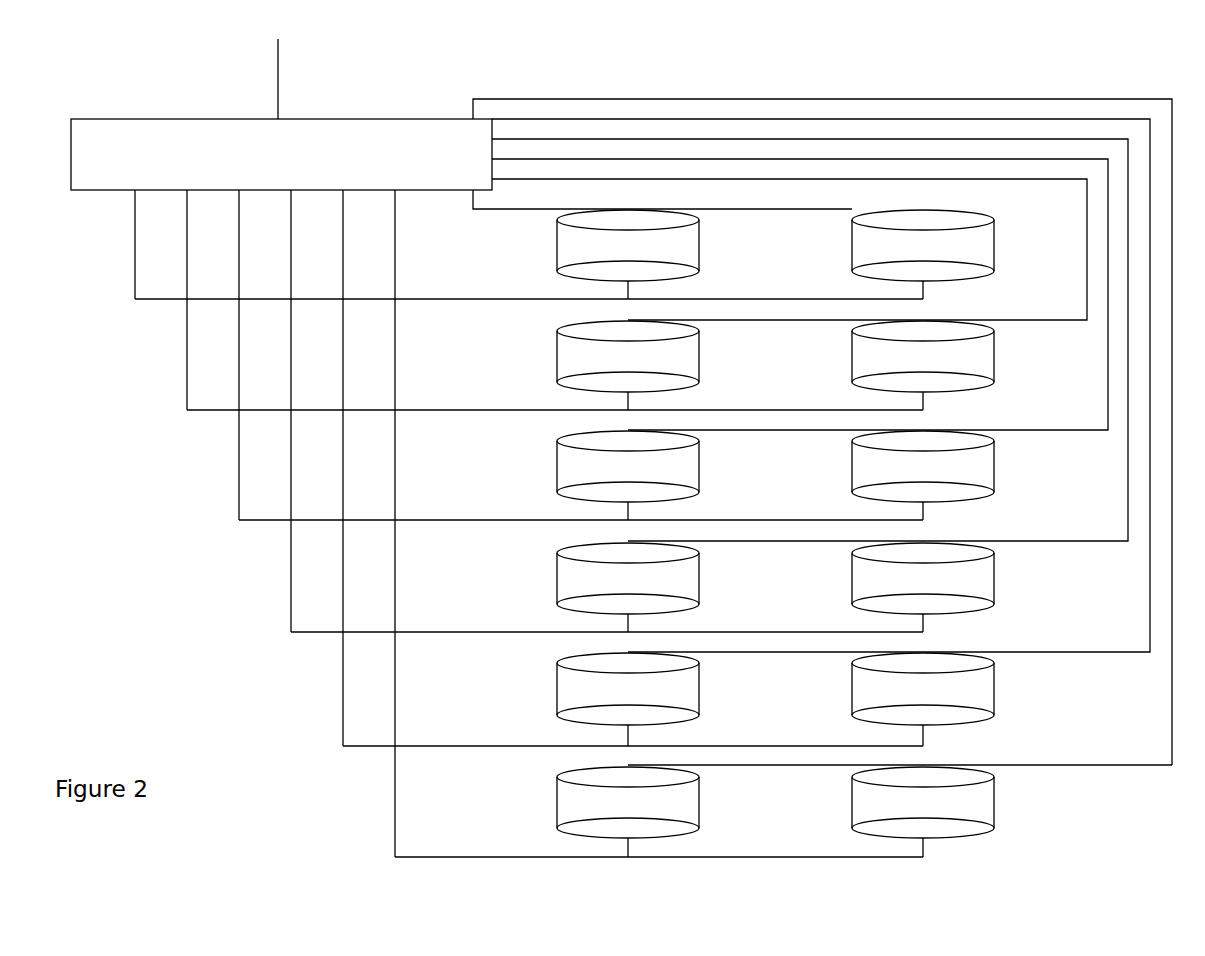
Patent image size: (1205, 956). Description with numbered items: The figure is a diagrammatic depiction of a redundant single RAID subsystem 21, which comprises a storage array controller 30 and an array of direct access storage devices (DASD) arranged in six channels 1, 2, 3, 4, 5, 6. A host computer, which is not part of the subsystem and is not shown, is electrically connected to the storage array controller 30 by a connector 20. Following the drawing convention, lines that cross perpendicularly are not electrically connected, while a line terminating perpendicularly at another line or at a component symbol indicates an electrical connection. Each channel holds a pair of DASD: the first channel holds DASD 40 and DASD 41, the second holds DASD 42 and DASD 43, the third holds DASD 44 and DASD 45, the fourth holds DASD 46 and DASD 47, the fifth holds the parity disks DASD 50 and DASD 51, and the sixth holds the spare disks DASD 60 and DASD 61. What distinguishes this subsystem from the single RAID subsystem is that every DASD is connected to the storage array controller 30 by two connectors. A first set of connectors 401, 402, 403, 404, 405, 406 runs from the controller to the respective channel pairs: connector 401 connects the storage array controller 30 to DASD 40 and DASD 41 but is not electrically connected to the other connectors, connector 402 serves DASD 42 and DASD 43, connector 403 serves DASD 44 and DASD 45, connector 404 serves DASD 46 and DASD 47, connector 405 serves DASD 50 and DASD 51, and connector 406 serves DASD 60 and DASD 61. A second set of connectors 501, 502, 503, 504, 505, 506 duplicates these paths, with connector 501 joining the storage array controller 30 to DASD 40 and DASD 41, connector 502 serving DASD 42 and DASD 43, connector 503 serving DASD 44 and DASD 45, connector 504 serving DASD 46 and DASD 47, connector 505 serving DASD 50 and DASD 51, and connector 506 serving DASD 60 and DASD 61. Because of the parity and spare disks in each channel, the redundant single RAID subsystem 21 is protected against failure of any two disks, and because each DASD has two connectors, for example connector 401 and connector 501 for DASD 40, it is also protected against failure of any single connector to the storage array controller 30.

The connector 20 is at (278, 76).
The redundant single RAID subsystem 21 is at (603, 77).
The storage array controller 30 is at (187, 118).
The DASD 1A 40 is at (555, 245).
The DASD 1B 41 is at (996, 246).
The DASD 2A 42 is at (555, 356).
The DASD 2B 43 is at (996, 366).
The DASD 3A 44 is at (555, 466).
The DASD 3B 45 is at (996, 477).
The DASD 4A 46 is at (555, 577).
The DASD 4B 47 is at (996, 589).
The DASD 5A 50 is at (555, 688).
The DASD 5B 51 is at (996, 691).
The DASD 6A 60 is at (555, 801).
The DASD 6B 61 is at (996, 815).
The connector 401 is at (135, 248).
The connector 402 is at (187, 359).
The connector 403 is at (239, 469).
The connector 404 is at (291, 581).
The connector 405 is at (343, 695).
The connector 406 is at (395, 806).
The channel 1 is at (135, 299).
The channel 2 is at (187, 410).
The channel 3 is at (239, 520).
The channel 4 is at (291, 632).
The channel 5 is at (343, 746).
The channel 6 is at (395, 857).
The connector 501 is at (730, 212).
The connector 502 is at (735, 323).
The connector 503 is at (727, 433).
The connector 504 is at (735, 544).
The connector 505 is at (742, 655).
The connector 506 is at (753, 768).